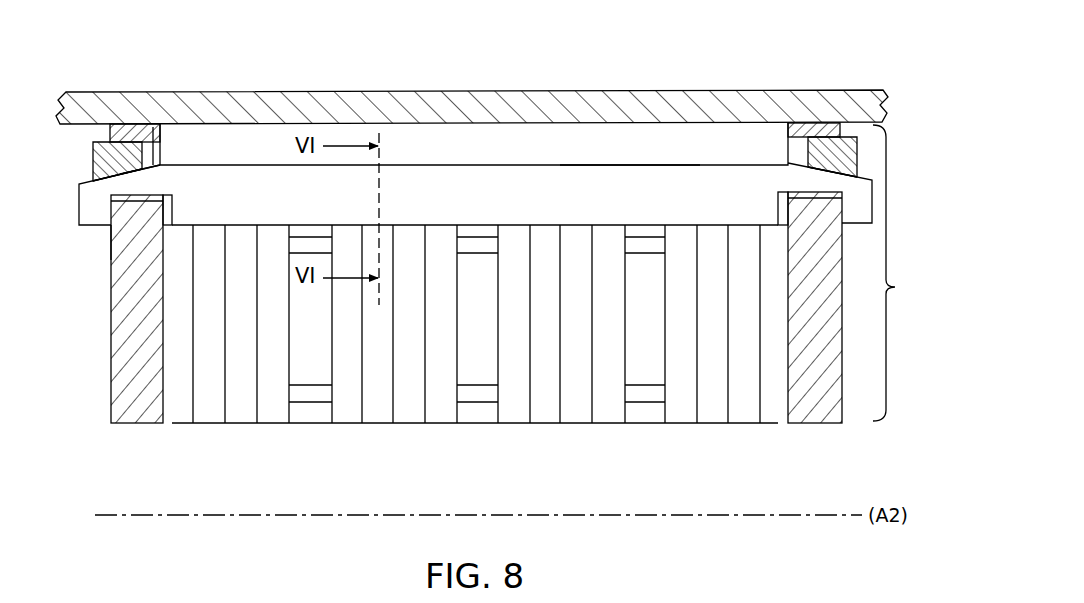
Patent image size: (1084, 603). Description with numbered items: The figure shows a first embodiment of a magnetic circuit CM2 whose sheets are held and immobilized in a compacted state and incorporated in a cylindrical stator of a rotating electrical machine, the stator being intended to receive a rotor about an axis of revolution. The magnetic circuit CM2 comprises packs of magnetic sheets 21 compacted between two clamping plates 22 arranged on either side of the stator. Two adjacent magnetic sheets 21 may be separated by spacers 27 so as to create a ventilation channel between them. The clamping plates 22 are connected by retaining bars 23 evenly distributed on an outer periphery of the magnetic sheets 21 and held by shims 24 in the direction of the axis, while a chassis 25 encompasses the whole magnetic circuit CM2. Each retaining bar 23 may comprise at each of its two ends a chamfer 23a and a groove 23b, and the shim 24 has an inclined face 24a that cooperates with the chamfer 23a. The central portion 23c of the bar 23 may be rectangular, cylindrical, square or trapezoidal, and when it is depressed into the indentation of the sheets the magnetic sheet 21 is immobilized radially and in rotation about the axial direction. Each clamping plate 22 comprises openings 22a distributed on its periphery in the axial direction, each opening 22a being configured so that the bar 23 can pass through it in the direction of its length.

The magnetic sheets 21 is at (290, 432).
The clamping plates 22 is at (138, 410).
The opening 22a is at (112, 237).
The retaining bar 23 is at (864, 214).
The chamfer 23a is at (153, 165).
The groove 23b is at (150, 197).
The central portion 23c is at (648, 190).
The shim 24 is at (93, 163).
The inclined face 24a is at (92, 171).
The chassis 25 is at (769, 90).
The spacers 27 is at (318, 403).
The magnetic circuit CM2 is at (911, 273).